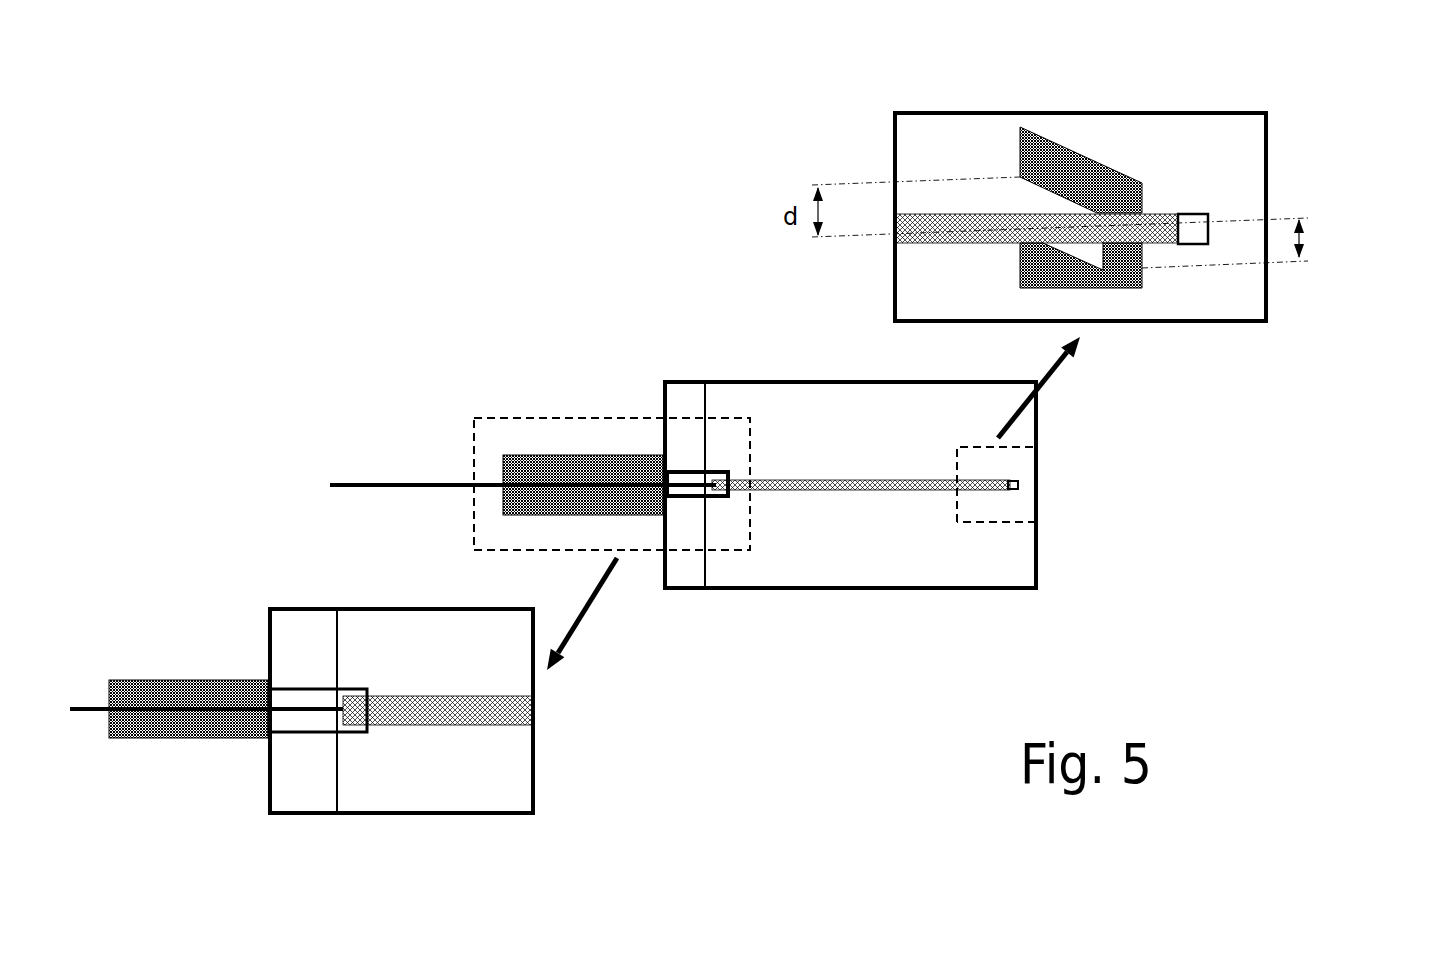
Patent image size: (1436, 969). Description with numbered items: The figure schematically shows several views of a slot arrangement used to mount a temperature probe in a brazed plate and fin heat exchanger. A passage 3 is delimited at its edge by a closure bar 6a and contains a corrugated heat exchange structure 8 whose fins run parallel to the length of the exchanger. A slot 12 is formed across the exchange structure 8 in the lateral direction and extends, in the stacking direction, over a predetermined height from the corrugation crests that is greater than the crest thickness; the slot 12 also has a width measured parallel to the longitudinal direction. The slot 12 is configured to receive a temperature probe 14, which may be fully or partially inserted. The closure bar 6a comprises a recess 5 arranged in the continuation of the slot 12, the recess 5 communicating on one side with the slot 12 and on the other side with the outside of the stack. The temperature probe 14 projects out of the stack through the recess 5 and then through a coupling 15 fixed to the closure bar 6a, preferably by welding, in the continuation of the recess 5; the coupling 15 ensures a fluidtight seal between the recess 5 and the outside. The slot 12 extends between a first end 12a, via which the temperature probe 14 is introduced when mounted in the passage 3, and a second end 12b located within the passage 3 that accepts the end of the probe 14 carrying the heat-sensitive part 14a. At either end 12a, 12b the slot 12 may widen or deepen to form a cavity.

The passage 3 is at (850, 485).
The recess 5 is at (717, 506).
The closure bar 6a is at (685, 402).
The heat exchange structure 8 is at (925, 151).
The slot 12 is at (1222, 300).
The first end 12a is at (354, 731).
The second end 12b is at (1213, 207).
The temperature probe 14 is at (993, 210).
The heat-sensitive part 14a is at (1163, 200).
The coupling 15 is at (585, 452).